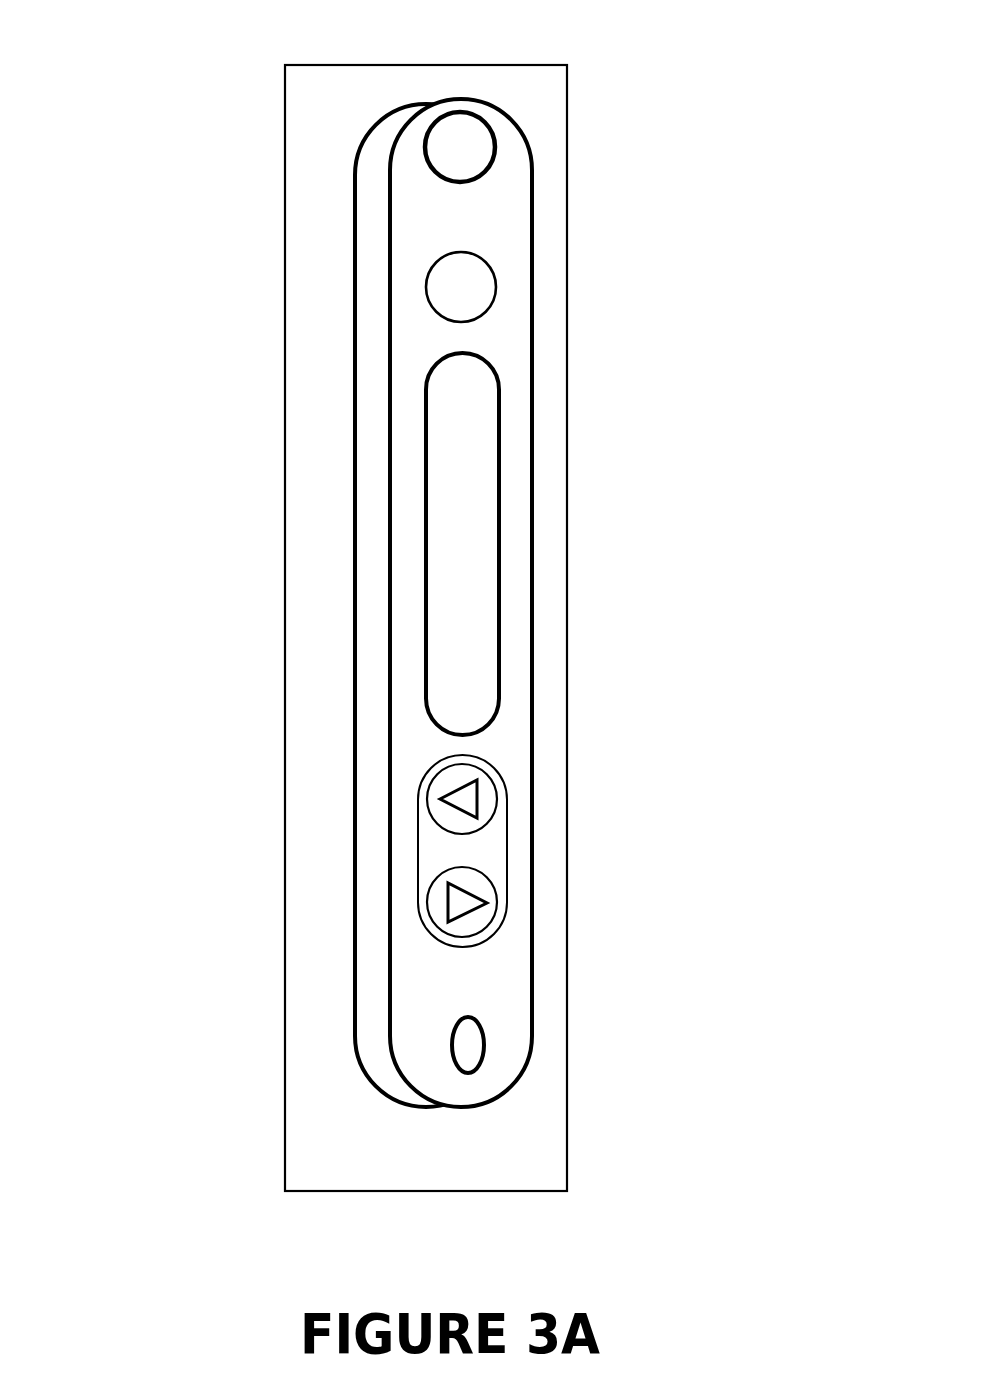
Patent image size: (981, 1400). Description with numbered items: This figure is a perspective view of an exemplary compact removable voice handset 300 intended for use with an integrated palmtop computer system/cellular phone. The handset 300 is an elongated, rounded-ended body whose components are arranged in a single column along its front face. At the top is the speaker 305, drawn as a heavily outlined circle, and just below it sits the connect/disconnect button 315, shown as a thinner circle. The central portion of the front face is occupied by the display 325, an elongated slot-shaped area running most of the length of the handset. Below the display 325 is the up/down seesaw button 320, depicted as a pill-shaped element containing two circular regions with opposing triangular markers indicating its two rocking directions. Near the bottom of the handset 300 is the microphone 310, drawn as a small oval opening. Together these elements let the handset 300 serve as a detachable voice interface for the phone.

The compact removable voice handset 300 is at (73, 23).
The speaker 305 is at (480, 159).
The microphone 310 is at (483, 1042).
The connect/disconnect button 315 is at (482, 299).
The up/down seesaw button 320 is at (507, 848).
The display 325 is at (482, 569).